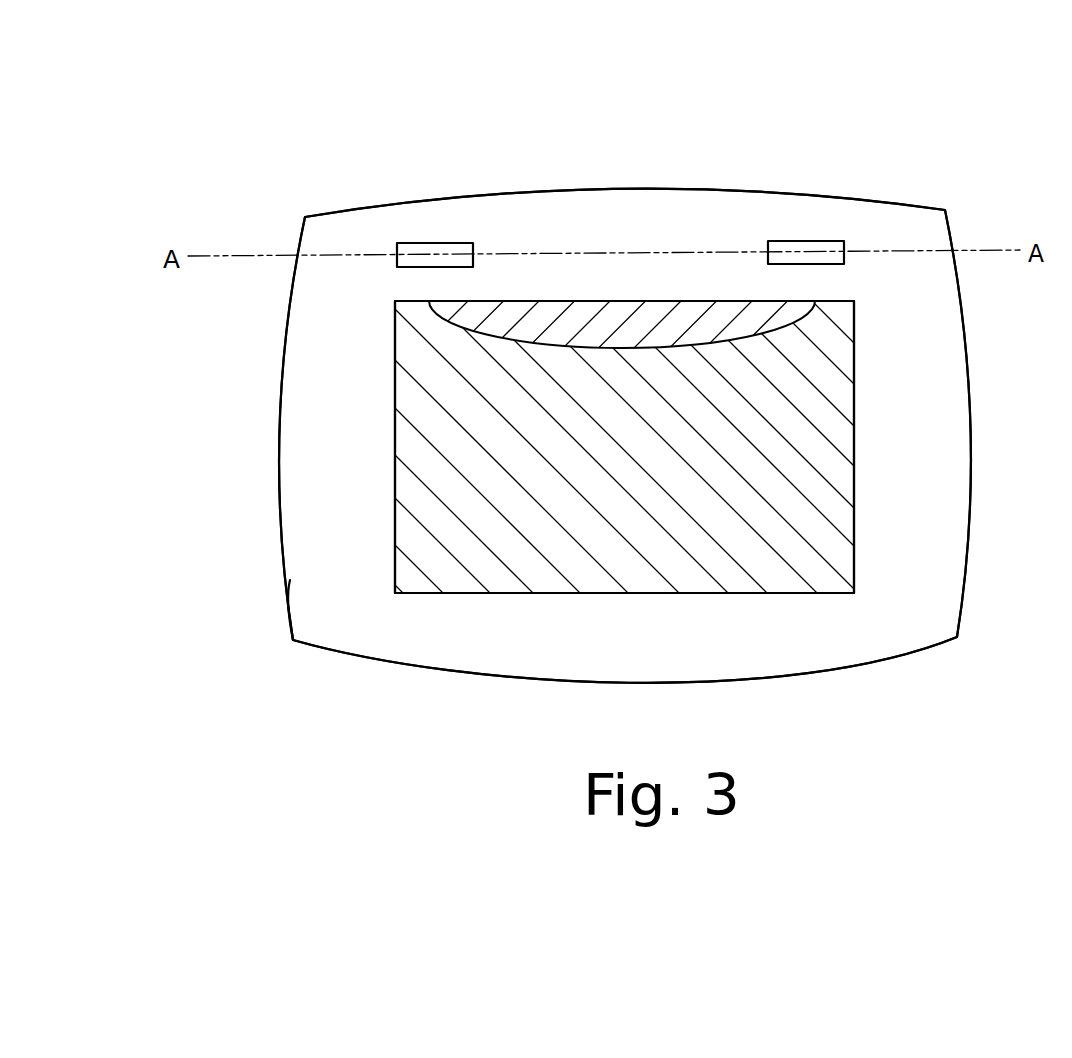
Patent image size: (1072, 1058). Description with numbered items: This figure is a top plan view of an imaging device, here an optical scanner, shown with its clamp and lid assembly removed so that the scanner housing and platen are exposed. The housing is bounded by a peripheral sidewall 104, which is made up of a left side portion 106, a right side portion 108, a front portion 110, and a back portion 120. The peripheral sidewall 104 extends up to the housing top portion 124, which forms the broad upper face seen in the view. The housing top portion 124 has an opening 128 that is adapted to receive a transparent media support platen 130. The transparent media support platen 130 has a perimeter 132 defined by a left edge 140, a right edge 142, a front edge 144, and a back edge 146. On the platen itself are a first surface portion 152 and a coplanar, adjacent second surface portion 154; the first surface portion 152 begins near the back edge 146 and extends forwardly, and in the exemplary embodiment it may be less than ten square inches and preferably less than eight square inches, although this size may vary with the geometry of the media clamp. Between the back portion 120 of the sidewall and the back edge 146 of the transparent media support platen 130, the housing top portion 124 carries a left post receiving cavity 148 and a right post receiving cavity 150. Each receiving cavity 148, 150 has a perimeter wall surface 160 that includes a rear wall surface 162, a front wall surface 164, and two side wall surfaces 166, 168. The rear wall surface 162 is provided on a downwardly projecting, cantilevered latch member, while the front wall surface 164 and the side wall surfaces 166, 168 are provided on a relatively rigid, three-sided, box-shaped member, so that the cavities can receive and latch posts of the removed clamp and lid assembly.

The peripheral sidewall 104 is at (323, 648).
The left side portion 106 is at (290, 603).
The right side portion 108 is at (964, 580).
The front portion 110 is at (363, 658).
The back portion 120 is at (347, 211).
The housing top portion 124 is at (363, 425).
The opening 128 is at (758, 594).
The transparent media support platen 130 is at (745, 460).
The perimeter 132 is at (850, 605).
The left edge 140 is at (393, 483).
The right edge 142 is at (856, 405).
The front edge 144 is at (538, 595).
The back edge 146 is at (530, 301).
The left post receiving cavity 148 is at (440, 250).
The right post receiving cavity 150 is at (840, 241).
The first surface portion 152 is at (634, 334).
The second surface portion 154 is at (624, 522).
The perimeter wall surface 160 is at (795, 262).
The rear wall surface 162 is at (850, 254).
The front wall surface 164 is at (790, 265).
The side wall surface 166 is at (807, 255).
The side wall surface 168 is at (868, 258).